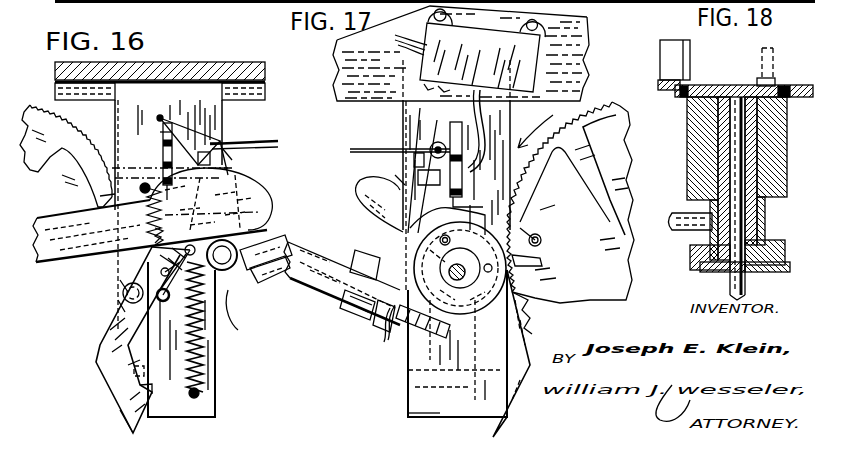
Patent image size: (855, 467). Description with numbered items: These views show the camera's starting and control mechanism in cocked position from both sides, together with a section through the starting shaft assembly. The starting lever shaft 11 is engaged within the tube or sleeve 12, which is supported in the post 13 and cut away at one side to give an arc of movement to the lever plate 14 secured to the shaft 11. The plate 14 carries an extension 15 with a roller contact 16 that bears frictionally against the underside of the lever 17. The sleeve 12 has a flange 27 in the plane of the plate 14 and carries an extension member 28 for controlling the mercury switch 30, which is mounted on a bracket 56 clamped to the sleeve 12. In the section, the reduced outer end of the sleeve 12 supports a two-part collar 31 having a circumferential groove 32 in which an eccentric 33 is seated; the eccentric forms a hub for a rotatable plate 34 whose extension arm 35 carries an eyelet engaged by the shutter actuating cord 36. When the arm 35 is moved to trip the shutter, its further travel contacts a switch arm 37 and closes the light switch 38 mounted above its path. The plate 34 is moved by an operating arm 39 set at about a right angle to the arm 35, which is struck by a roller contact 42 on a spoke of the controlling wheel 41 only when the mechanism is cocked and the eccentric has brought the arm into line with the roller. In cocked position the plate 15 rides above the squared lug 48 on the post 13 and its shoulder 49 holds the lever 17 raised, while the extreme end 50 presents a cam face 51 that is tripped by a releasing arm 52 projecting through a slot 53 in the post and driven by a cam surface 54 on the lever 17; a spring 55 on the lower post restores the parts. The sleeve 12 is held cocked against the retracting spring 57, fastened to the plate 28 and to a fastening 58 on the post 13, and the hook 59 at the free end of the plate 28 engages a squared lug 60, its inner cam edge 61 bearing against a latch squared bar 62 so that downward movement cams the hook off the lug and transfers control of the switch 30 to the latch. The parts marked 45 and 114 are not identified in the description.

In FIG. 17, the starting lever shaft 11 is at (425, 320).
In FIG. 18, the starting lever shaft 11 is at (733, 153).
In FIG. 16, the tube or sleeve 12 is at (173, 215).
In FIG. 17, the tube or sleeve 12 is at (456, 175).
In FIG. 18, the tube or sleeve 12 is at (700, 120).
In FIG. 16, the post 13 is at (210, 385).
In FIG. 17, the post 13 is at (408, 352).
In FIG. 18, the post 13 is at (780, 140).
In FIG. 17, the lever plate 14 is at (378, 315).
In FIG. 18, the lever plate 14 is at (722, 90).
In FIG. 16, the extension 15 is at (232, 152).
In FIG. 18, the extension 15 is at (700, 84).
In FIG. 16, the roller contact 16 is at (238, 252).
In FIG. 17, the roller contact 16 is at (353, 252).
In FIG. 18, the roller contact 16 is at (663, 66).
In FIG. 16, the lever 17 is at (275, 198).
In FIG. 17, the lever 17 is at (358, 205).
In FIG. 16, the flange 27 is at (147, 246).
In FIG. 18, the flange 27 is at (748, 90).
In FIG. 16, the extension member 28 is at (110, 335).
In FIG. 18, the extension member 28 is at (786, 86).
In FIG. 17, the mercury switch 30 is at (320, 240).
In FIG. 18, the collar 31 is at (696, 268).
In FIG. 18, the circumferential groove 32 is at (782, 272).
In FIG. 17, the eccentric 33 is at (528, 262).
In FIG. 18, the eccentric 33 is at (786, 250).
In FIG. 17, the rotatable plate 34 is at (512, 312).
In FIG. 17, the extension arm 35 is at (448, 206).
In FIG. 17, the shutter actuating cord 36 is at (380, 148).
In FIG. 17, the switch arm 37 is at (474, 120).
In FIG. 17, the light switch 38 is at (437, 42).
In FIG. 17, the operating arm 39 is at (522, 226).
In FIG. 16, the controlling wheel 41 is at (54, 90).
In FIG. 17, the controlling wheel 41 is at (612, 118).
In FIG. 17, the roller contact 42 is at (541, 238).
In FIG. 17, the gear teeth 45 is at (596, 104).
In FIG. 16, the squared lug 48 is at (240, 143).
In FIG. 17, the squared lug 48 is at (419, 122).
In FIG. 16, the shoulder 49 is at (220, 141).
In FIG. 17, the shoulder 49 is at (412, 150).
In FIG. 16, the extreme end 50 is at (158, 117).
In FIG. 17, the extreme end 50 is at (439, 141).
In FIG. 16, the cam face 51 is at (198, 156).
In FIG. 16, the releasing arm 52 is at (163, 157).
In FIG. 17, the releasing arm 52 is at (450, 160).
In FIG. 16, the slot 53 is at (163, 137).
In FIG. 16, the cam surface 54 is at (235, 170).
In FIG. 17, the cam surface 54 is at (395, 175).
In FIG. 16, the spring 55 is at (204, 360).
In FIG. 17, the bracket 56 is at (345, 296).
In FIG. 18, the bracket 56 is at (690, 232).
In FIG. 16, the retracting spring 57 is at (100, 210).
In FIG. 16, the fastening 58 is at (110, 193).
In FIG. 16, the hook 59 is at (125, 412).
In FIG. 17, the hook 59 is at (408, 413).
In FIG. 16, the squared lug 60 is at (140, 392).
In FIG. 17, the squared lug 60 is at (415, 387).
In FIG. 16, the inner edge 61 is at (128, 365).
In FIG. 16, the latch squared bar 62 is at (134, 380).
In FIG. 16, the cam arm 114 is at (212, 207).